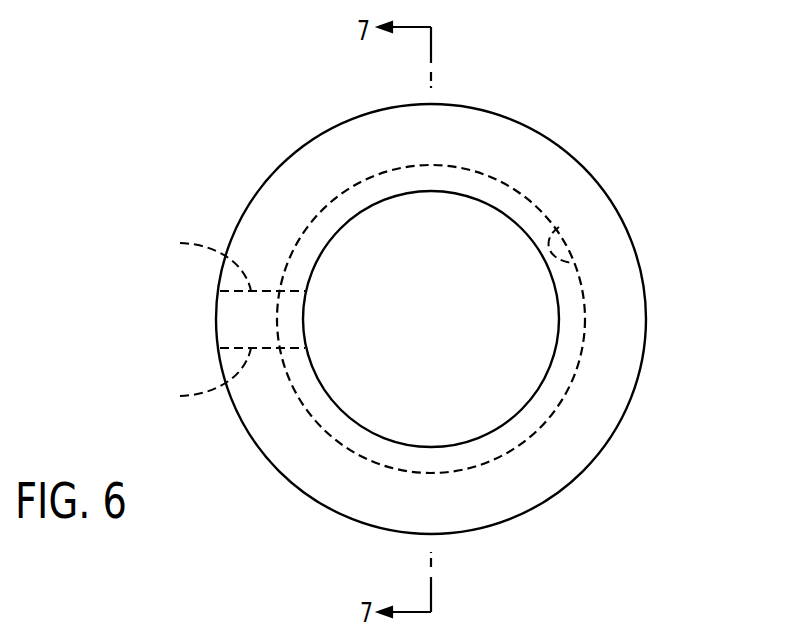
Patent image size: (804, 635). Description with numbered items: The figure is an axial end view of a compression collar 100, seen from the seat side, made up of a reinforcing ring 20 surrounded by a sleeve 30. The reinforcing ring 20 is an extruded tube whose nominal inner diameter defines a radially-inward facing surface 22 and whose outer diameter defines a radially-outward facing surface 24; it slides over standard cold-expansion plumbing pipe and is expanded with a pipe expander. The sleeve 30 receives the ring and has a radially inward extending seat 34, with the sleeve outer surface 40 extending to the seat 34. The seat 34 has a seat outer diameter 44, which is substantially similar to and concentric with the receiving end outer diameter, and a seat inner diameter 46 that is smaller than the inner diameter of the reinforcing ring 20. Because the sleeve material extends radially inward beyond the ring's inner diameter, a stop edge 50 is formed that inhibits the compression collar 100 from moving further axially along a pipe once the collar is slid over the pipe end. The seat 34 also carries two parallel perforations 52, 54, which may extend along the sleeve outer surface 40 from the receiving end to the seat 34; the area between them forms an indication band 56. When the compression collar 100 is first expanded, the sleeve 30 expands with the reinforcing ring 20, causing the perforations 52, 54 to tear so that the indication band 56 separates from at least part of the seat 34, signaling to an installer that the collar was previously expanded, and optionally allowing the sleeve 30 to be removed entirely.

The compression collar 100 is at (587, 93).
The reinforcing ring 20 is at (372, 152).
The radially-inward facing surface 22 is at (559, 227).
The radially-outward facing surface 24 is at (647, 336).
The sleeve 30 is at (470, 97).
The seat 34 is at (598, 413).
The sleeve outer surface 40 is at (310, 140).
The seat outer diameter 44 is at (335, 512).
The seat inner diameter 46 is at (546, 372).
The stop edge 50 is at (327, 227).
The perforation 52 is at (198, 259).
The perforation 54 is at (198, 382).
The indication band 56 is at (251, 318).